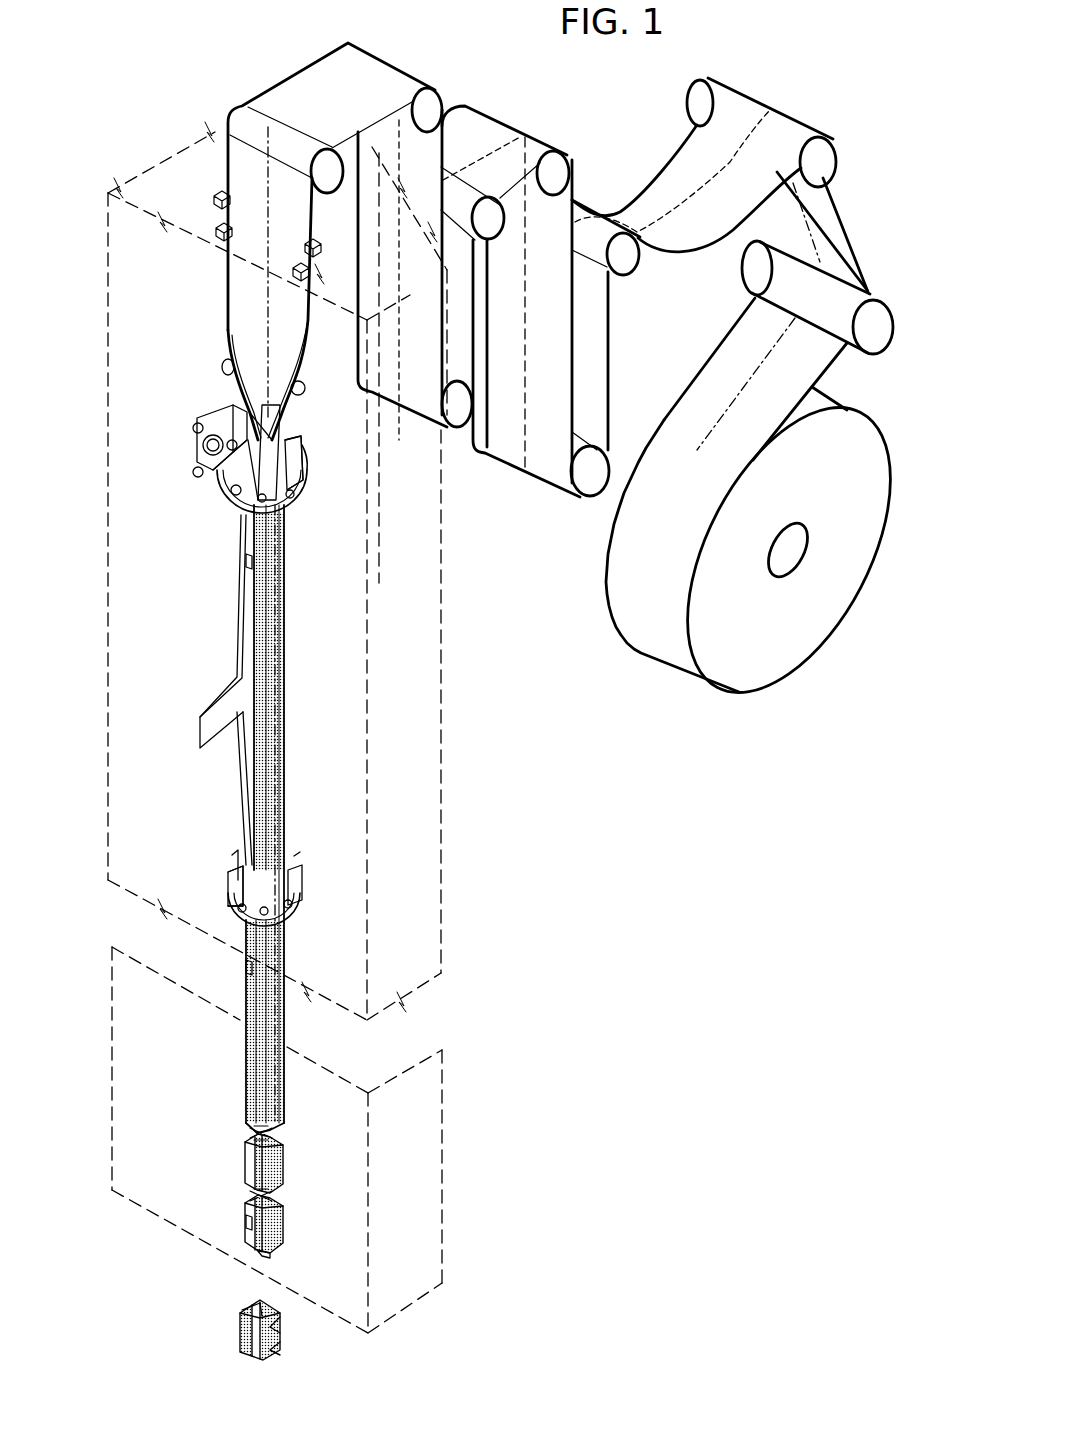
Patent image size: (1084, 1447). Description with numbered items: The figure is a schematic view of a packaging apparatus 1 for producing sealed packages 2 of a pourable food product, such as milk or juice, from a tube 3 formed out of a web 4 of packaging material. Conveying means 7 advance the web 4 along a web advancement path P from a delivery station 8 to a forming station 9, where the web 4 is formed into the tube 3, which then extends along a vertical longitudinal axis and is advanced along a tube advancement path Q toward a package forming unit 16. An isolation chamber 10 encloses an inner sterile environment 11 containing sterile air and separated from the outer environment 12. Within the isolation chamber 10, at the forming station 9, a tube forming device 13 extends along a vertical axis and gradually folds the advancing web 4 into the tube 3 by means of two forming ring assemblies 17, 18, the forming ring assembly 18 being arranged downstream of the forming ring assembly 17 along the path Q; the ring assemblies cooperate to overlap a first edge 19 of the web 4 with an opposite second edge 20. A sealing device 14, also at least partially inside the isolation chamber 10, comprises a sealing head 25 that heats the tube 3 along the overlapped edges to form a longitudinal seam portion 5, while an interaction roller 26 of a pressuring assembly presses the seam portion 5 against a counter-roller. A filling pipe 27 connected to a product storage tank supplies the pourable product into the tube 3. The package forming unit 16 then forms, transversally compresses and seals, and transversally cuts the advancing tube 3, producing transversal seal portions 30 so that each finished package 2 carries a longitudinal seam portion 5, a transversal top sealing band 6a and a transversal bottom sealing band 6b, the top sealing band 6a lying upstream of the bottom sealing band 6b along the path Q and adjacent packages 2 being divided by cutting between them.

The packaging apparatus 1 is at (803, 80).
The package 2 is at (277, 1162).
The tube 3 is at (287, 757).
The web 4 is at (830, 233).
The longitudinal seam portion 5 is at (244, 553).
The transversal top sealing band 6a is at (263, 1252).
The transversal bottom sealing band 6b is at (260, 1300).
The conveying means 7 is at (897, 230).
The delivery station 8 is at (900, 423).
The forming station 9 is at (260, 352).
The isolation chamber 10 is at (142, 188).
The inner environment 11 is at (130, 305).
The outer environment 12 is at (73, 378).
The tube forming device 13 is at (315, 417).
The sealing device 14 is at (217, 620).
The package forming unit 16 is at (405, 1173).
The forming ring assembly 17 is at (308, 458).
The forming ring assembly 18 is at (305, 900).
The first edge 19 is at (242, 345).
The second edge 20 is at (287, 373).
The sealing head 25 is at (248, 723).
The interaction roller 26 is at (230, 890).
The filling pipe 27 is at (260, 410).
The transversal seal portion 30 is at (257, 1133).
The web advancement path P is at (332, 93).
The tube advancement path Q is at (277, 693).